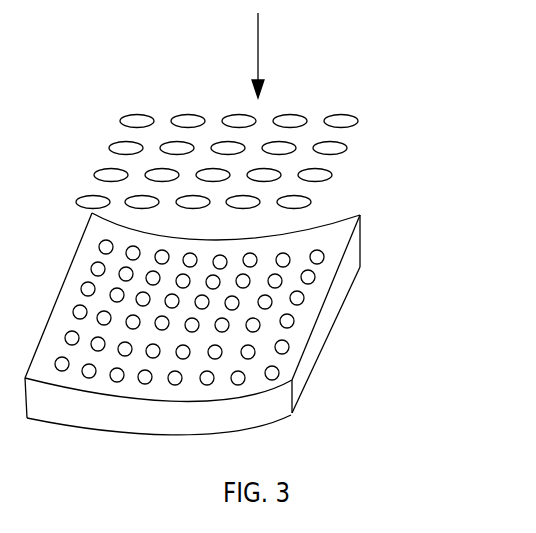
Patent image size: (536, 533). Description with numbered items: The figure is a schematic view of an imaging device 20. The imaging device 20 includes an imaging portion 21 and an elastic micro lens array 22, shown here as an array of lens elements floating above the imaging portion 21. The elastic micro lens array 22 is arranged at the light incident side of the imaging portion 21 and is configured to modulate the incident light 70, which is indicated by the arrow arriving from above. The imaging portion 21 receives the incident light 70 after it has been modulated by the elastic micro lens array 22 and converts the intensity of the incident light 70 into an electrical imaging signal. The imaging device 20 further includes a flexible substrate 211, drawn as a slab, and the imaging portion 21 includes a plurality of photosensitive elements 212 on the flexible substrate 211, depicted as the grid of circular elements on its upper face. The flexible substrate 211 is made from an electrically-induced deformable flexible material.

The imaging device 20 is at (140, 25).
The incident light 70 is at (258, 65).
The elastic micro lens array 22 is at (359, 115).
The imaging portion 21 is at (251, 324).
The flexible substrate 211 is at (320, 285).
The photosensitive element 212 is at (304, 298).